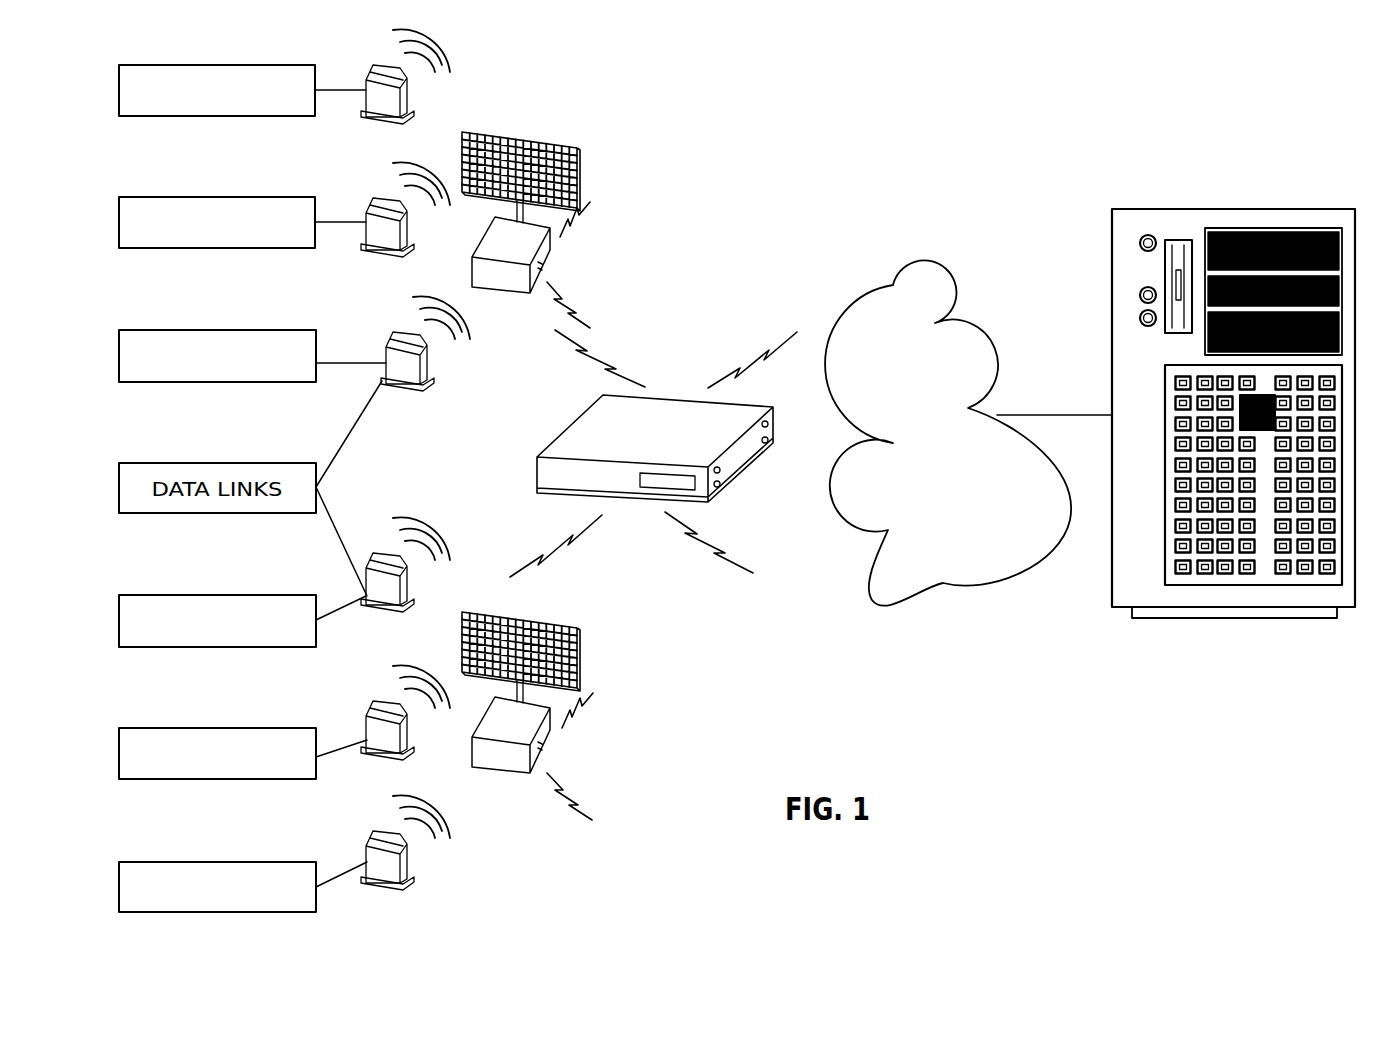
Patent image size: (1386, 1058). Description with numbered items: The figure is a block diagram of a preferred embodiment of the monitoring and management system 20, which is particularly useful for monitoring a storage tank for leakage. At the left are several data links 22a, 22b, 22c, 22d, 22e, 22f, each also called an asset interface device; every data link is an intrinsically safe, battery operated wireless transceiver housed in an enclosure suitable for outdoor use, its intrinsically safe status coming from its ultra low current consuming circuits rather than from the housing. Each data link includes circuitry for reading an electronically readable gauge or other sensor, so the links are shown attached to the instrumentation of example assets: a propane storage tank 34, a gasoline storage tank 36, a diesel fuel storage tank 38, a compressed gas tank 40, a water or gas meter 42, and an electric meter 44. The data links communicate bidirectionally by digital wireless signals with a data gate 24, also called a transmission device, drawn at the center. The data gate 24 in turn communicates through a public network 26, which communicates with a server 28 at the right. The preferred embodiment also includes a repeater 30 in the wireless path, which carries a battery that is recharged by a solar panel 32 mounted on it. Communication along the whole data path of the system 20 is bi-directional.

The monitoring and management system 20 is at (771, 135).
The data link 22a is at (381, 123).
The data link 22b is at (381, 256).
The data link 22c is at (404, 387).
The data link 22d is at (383, 613).
The data link 22e is at (387, 763).
The data link 22f is at (390, 892).
The data gate 24 is at (652, 395).
The public network 26 is at (867, 592).
The server 28 is at (1106, 351).
The repeater 30 is at (492, 288).
The solar panel 32 is at (522, 137).
The propane storage tank 34 is at (213, 64).
The gasoline storage tank 36 is at (212, 196).
The diesel fuel storage tank 38 is at (217, 329).
The compressed gas tank 40 is at (212, 594).
The water or gas meter 42 is at (217, 727).
The electric meter 44 is at (210, 861).